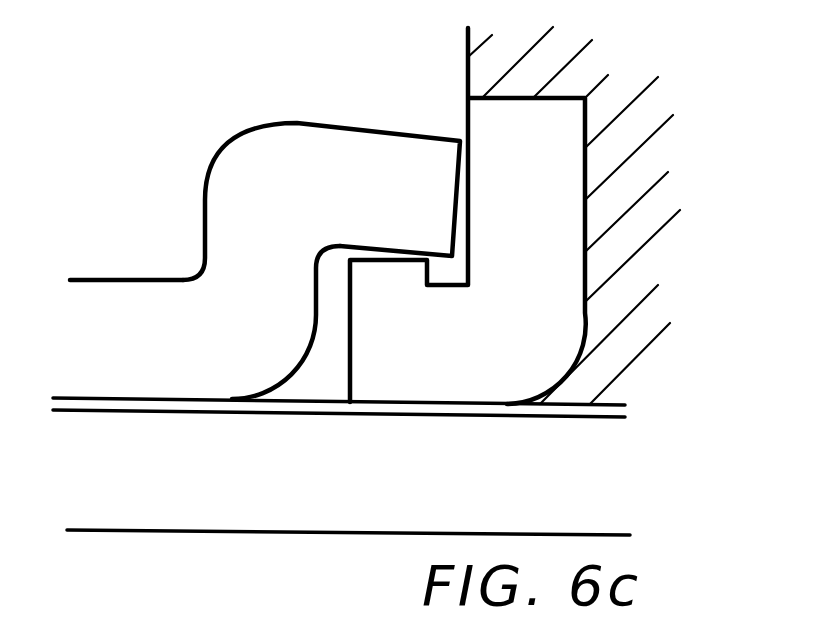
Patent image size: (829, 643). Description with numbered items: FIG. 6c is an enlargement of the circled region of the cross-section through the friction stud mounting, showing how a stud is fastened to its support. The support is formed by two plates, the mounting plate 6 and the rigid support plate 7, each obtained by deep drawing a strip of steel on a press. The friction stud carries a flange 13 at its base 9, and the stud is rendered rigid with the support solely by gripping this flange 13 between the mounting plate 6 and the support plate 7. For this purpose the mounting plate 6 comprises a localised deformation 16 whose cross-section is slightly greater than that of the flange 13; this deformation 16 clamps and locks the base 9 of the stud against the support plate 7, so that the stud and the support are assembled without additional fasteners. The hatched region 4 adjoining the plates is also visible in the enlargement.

The housing 4 is at (575, 73).
The mounting plate 6 is at (158, 352).
The support plate 7 is at (212, 497).
The base 9 is at (545, 313).
The flange 13 is at (385, 362).
The localised deformation 16 is at (383, 188).